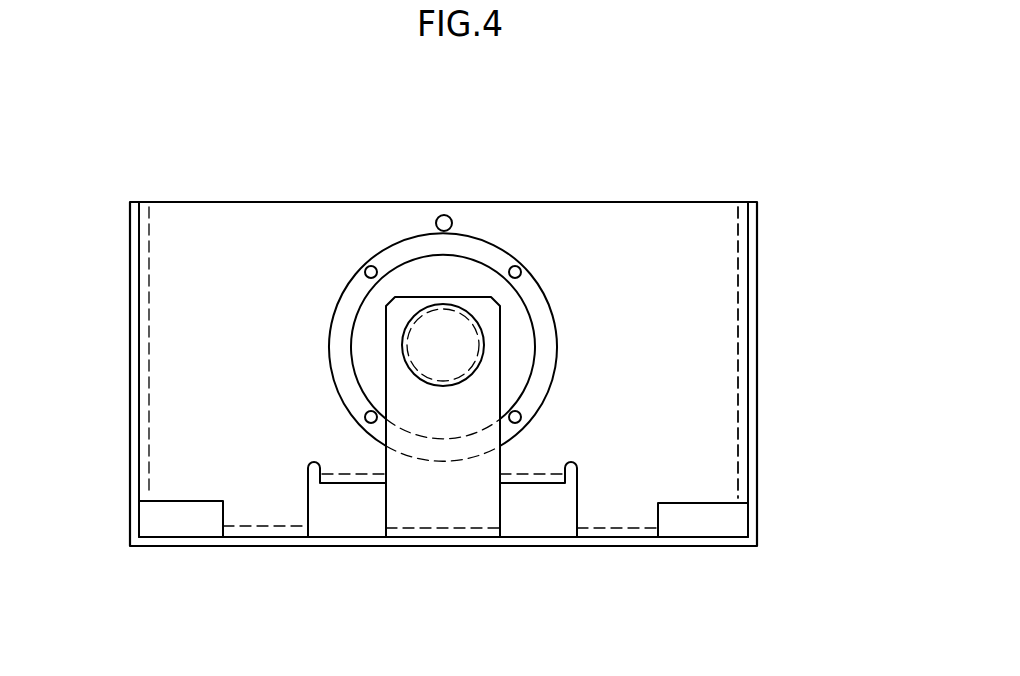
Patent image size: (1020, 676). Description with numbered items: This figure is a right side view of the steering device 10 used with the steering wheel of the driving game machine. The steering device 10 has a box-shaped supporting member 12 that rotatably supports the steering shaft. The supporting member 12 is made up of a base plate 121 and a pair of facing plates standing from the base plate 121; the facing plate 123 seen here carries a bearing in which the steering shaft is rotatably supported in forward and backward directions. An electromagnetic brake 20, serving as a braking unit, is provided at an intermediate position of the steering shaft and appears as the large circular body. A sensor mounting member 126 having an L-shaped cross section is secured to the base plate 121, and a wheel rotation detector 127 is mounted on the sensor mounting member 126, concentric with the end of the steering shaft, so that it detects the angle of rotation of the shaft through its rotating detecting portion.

The steering device 10 is at (591, 172).
The supporting member 12 is at (766, 334).
The facing plate 123 is at (711, 231).
The base plate 121 is at (591, 538).
The electromagnetic brake 20 is at (517, 313).
The sensor mounting member 126 is at (458, 513).
The wheel rotation detector 127 is at (441, 330).